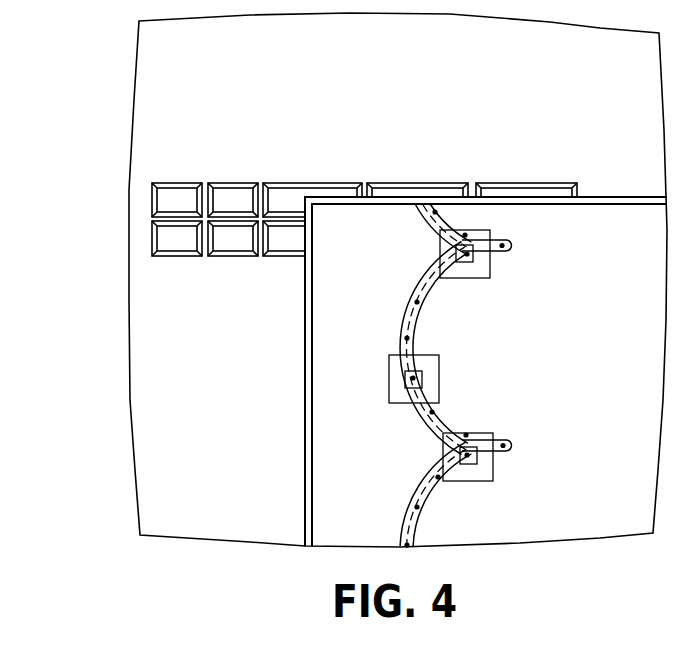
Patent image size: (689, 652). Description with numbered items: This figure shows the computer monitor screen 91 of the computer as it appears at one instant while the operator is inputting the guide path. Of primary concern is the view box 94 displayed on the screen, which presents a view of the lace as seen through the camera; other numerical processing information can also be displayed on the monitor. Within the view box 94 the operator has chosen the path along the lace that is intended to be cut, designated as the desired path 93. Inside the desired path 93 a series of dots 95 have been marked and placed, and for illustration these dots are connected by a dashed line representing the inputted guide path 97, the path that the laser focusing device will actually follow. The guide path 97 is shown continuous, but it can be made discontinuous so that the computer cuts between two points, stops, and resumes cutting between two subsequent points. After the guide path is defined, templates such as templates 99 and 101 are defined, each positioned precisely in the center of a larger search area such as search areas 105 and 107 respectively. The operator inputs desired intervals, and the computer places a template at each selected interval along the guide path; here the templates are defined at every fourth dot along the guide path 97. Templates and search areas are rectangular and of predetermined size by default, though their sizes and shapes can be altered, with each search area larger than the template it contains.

The computer monitor screen 91 is at (128, 195).
The desired path 93 is at (398, 333).
The view box 94 is at (305, 437).
The dots 95 is at (439, 478).
The inputted guide path 97 is at (406, 309).
The template 99 is at (478, 463).
The template 101 is at (422, 380).
The search area 105 is at (493, 465).
The search area 107 is at (439, 365).